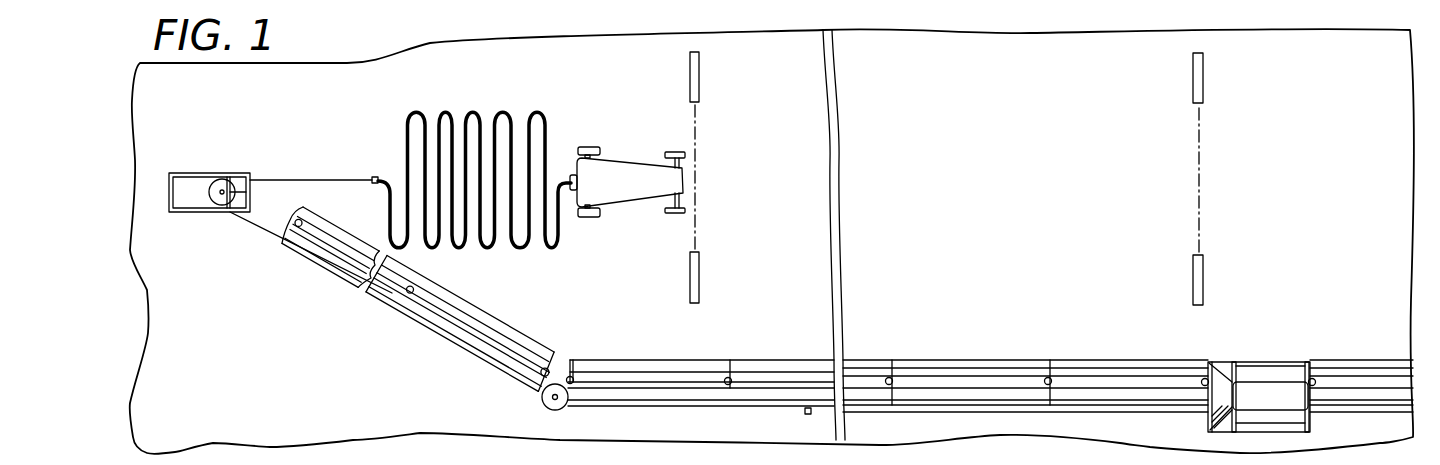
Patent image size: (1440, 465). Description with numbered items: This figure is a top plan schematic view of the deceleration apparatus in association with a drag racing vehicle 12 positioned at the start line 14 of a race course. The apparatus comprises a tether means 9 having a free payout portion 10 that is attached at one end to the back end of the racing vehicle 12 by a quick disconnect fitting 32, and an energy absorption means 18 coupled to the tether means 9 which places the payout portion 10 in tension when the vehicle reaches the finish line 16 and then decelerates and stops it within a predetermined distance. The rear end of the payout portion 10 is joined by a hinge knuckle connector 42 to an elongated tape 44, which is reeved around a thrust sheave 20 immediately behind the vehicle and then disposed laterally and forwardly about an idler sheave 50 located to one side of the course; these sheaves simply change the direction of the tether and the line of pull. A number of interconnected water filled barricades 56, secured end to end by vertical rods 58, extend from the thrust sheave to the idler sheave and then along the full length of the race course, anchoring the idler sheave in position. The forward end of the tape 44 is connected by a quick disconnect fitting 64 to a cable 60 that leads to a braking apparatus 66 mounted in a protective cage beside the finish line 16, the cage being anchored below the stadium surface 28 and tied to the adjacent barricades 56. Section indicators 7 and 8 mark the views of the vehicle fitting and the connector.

The section line 7 is at (570, 197).
The section line 8 is at (372, 170).
The tether means 9 is at (482, 251).
The free payout portion 10 is at (521, 254).
The racing vehicle 12 is at (630, 202).
The start line 14 is at (698, 124).
The finish line 16 is at (1203, 122).
The energy absorption means 18 is at (177, 215).
The thrust pulley or sheave 20 is at (211, 181).
The stadium surface 28 is at (982, 162).
The quick disconnect fitting 32 is at (571, 178).
The hinge knuckle connector 42 is at (374, 186).
The elongated tape 44 is at (263, 232).
The idler pulley or sheave 50 is at (546, 405).
The water filled barricades 56 is at (420, 318).
The vertical rods 58 is at (571, 377).
The cable 60 is at (876, 412).
The quick disconnect fitting 64 is at (806, 415).
The braking apparatus 66 is at (1312, 417).